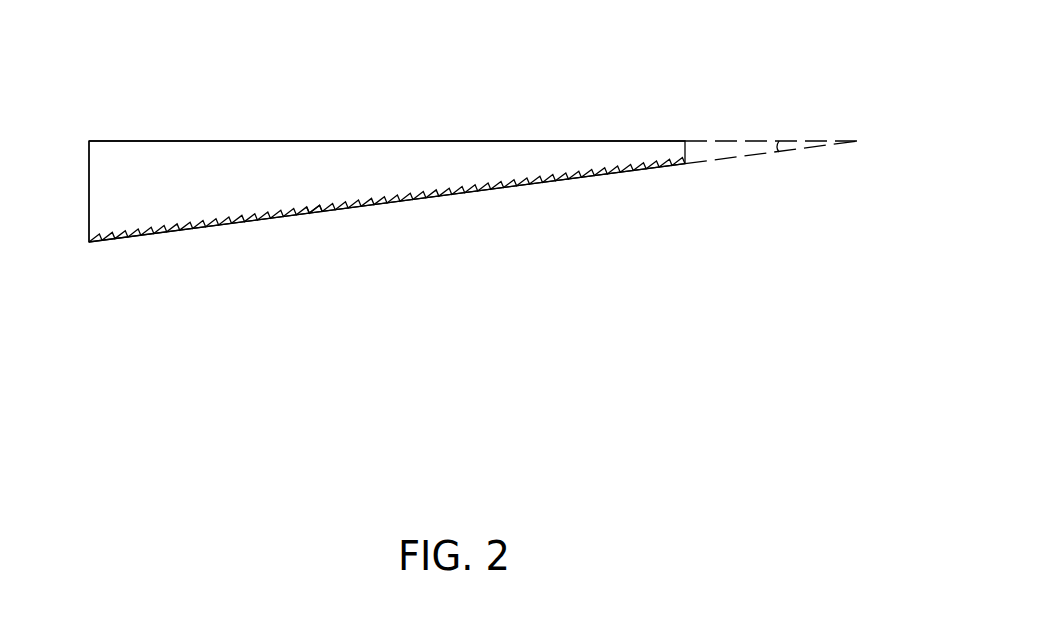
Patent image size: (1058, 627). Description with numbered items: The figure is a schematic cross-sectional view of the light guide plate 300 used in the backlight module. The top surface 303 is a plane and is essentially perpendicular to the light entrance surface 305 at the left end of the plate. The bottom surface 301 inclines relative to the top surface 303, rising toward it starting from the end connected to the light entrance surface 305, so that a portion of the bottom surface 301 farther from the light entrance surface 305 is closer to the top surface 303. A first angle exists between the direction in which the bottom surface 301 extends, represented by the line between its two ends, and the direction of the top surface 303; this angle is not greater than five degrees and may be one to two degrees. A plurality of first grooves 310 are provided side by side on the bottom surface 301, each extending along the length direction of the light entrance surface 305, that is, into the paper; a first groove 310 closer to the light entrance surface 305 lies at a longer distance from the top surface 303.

The light guide plate 300 is at (104, 64).
The bottom surface 301 is at (473, 193).
The top surface 303 is at (428, 141).
The light entrance surface 305 is at (88, 173).
The first grooves 310 is at (317, 210).